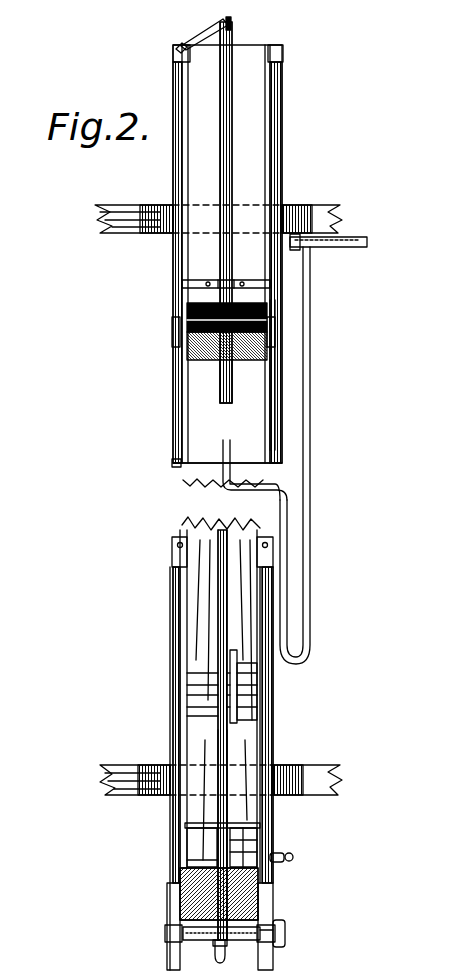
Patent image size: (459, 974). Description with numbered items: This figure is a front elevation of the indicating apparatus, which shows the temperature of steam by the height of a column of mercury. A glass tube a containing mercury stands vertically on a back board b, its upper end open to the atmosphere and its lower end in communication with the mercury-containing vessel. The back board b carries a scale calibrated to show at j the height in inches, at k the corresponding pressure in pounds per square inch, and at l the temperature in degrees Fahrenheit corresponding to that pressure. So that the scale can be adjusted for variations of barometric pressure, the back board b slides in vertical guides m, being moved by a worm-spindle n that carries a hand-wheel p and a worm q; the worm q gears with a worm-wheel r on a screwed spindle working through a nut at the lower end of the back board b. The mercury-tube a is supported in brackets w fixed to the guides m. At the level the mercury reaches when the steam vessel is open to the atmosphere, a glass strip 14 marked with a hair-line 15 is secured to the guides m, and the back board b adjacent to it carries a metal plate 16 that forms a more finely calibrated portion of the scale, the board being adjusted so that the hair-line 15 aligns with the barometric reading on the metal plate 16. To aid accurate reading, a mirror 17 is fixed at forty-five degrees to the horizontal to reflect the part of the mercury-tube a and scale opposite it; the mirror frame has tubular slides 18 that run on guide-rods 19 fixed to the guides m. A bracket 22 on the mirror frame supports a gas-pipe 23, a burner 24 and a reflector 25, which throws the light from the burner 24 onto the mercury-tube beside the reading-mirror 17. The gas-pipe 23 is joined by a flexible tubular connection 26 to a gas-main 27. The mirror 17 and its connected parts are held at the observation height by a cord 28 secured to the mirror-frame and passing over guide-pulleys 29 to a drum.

The guide-pulleys 29 is at (232, 22).
The cord 28 is at (232, 40).
The guide-rods 19 is at (283, 157).
The gas-main 27 is at (345, 246).
The brackets w is at (215, 284).
The tubular slides 18 is at (172, 327).
The mirror 17 is at (240, 345).
The glass tube a is at (222, 388).
The bracket 22 is at (277, 408).
The burner 24 is at (227, 458).
The reflector 25 is at (172, 463).
The flexible tubular connection 26 is at (310, 484).
The gas-pipe 23 is at (237, 494).
The back board b is at (186, 520).
The vertical guides m is at (172, 552).
The scale (pressure) k is at (235, 660).
The scale (temperature) l is at (195, 684).
The scale (height) j is at (245, 700).
The glass strip 14 is at (222, 809).
The hair-line 15 is at (222, 847).
The metal plate 16 is at (188, 855).
The worm q is at (250, 928).
The hand-wheel p is at (286, 943).
The worm-spindle n is at (214, 945).
The worm-wheel r is at (232, 942).